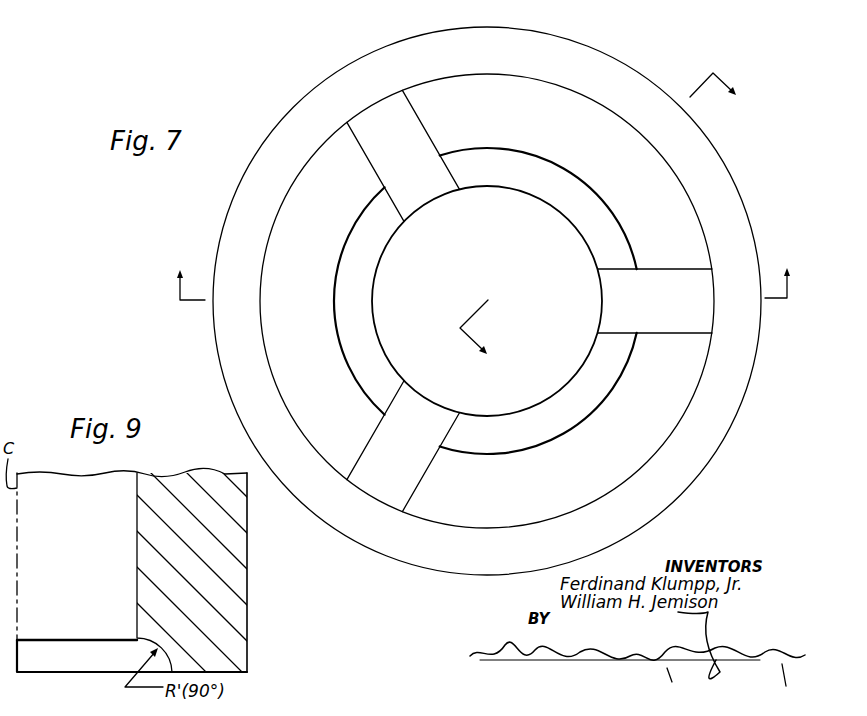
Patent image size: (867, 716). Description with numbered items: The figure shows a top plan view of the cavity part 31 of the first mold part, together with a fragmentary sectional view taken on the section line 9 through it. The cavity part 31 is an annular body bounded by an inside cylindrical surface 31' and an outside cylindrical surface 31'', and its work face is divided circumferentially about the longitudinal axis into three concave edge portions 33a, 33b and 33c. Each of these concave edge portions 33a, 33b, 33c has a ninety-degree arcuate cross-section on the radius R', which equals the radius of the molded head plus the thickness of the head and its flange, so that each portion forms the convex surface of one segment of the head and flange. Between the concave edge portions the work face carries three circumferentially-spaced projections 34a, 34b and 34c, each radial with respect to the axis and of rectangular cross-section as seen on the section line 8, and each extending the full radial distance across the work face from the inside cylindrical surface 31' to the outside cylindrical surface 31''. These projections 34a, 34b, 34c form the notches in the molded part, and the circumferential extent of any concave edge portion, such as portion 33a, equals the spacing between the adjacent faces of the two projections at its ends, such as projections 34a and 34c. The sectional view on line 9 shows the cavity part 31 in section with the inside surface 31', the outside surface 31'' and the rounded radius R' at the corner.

In FIG. 7, the cavity part 31 is at (487, 301).
In FIG. 9, the cavity part 31 is at (202, 551).
In FIG. 7, the inside cylindrical surface 31' is at (495, 301).
In FIG. 9, the inside cylindrical surface 31' is at (94, 572).
In FIG. 7, the outside cylindrical surface 31'' is at (489, 301).
In FIG. 9, the outside cylindrical surface 31'' is at (282, 572).
In FIG. 7, the concave edge portion 33a is at (351, 278).
In FIG. 7, the concave edge portion 33b is at (580, 200).
In FIG. 7, the concave edge portion 33c is at (565, 417).
In FIG. 7, the projection 34a is at (428, 121).
In FIG. 7, the projection 34b is at (641, 334).
In FIG. 7, the projection 34c is at (363, 448).
In FIG. 7, the section line 8- 8 is at (483, 272).
In FIG. 7, the section line 9- 9 is at (603, 223).